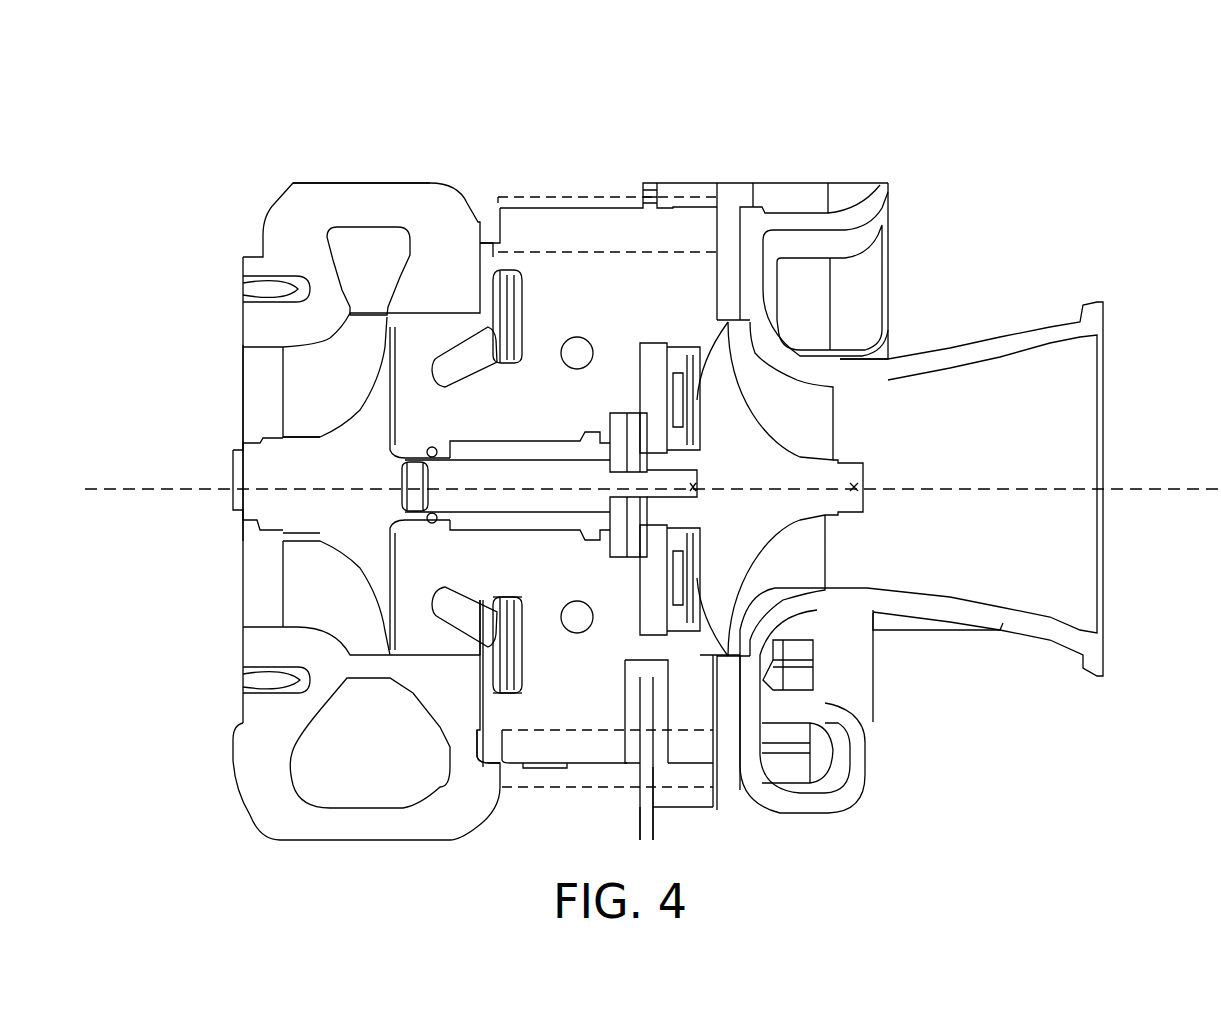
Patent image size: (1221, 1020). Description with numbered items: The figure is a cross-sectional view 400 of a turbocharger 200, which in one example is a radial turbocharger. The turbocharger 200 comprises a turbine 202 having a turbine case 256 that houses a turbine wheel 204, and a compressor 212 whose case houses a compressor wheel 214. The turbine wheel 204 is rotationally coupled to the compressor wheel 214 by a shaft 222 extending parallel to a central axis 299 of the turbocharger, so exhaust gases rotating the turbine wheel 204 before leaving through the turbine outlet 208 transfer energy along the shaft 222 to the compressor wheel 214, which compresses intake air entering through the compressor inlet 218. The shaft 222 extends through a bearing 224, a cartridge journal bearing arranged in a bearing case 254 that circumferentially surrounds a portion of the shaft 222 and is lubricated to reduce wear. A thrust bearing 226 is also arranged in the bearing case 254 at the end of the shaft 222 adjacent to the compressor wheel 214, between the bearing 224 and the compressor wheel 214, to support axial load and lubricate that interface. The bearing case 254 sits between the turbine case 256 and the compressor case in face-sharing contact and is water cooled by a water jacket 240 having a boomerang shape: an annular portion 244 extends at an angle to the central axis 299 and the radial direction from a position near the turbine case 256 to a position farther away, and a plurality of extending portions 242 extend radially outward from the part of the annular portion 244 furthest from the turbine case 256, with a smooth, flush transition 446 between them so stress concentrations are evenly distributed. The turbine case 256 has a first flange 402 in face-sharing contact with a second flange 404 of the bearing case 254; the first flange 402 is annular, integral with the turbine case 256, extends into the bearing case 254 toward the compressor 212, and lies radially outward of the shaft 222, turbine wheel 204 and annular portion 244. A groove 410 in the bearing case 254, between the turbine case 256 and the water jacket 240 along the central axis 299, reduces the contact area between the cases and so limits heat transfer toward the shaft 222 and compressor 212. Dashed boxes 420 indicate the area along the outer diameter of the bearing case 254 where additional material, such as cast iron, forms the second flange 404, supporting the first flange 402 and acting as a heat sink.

The turbocharger 200 is at (1058, 152).
The cross-sectional view 400 is at (1137, 78).
The turbine 202 is at (308, 134).
The turbine wheel 204 is at (362, 484).
The turbine outlet 208 is at (193, 410).
The compressor 212 is at (955, 296).
The compressor wheel 214 is at (795, 484).
The compressor inlet 218 is at (1037, 468).
The shaft 222 is at (552, 484).
The bearing 224 is at (513, 438).
The thrust bearing 226 is at (637, 360).
The water jacket 240 is at (497, 677).
The extending portions 242 is at (513, 700).
The annular portion 244 is at (480, 578).
The bearing case 254 is at (614, 709).
The turbine case 256 is at (482, 801).
The central axis 299 is at (140, 488).
The first flange 402 is at (432, 182).
The second flange 404 is at (444, 345).
The groove 410 is at (493, 257).
The dashed boxes 420 is at (555, 195).
The transition 446 is at (483, 655).